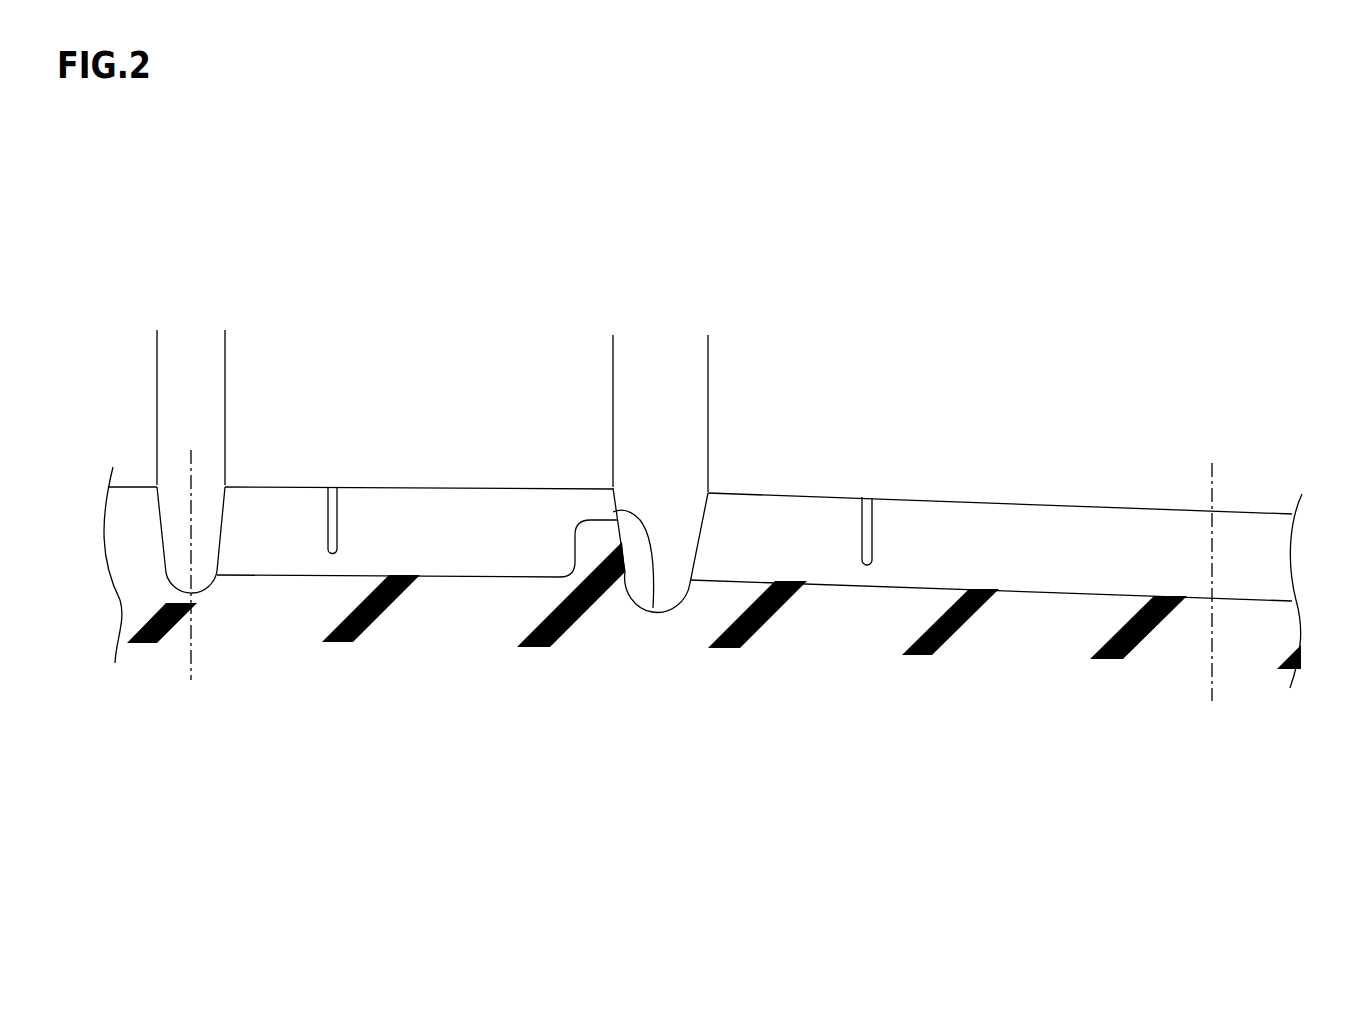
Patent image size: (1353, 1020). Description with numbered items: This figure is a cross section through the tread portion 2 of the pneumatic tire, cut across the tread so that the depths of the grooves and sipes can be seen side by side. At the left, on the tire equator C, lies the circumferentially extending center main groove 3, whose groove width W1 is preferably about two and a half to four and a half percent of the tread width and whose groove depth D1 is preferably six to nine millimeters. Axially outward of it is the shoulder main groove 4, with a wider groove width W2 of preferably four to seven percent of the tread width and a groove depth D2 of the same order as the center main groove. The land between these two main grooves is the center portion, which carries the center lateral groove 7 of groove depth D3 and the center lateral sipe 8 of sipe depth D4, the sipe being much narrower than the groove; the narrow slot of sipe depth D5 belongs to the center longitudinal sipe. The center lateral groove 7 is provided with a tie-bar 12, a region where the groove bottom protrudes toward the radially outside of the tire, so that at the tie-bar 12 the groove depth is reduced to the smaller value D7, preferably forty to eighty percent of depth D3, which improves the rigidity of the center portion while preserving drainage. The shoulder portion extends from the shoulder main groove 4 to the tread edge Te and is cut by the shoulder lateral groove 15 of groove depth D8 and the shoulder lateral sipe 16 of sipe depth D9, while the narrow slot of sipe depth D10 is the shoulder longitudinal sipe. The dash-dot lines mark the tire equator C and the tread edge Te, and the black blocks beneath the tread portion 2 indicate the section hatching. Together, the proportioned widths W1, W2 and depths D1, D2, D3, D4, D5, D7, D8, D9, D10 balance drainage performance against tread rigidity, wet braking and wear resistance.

The tread portion 2 is at (875, 398).
The center main groove 3 is at (180, 507).
The shoulder main groove 4 is at (652, 508).
The center lateral groove 7 is at (406, 507).
The center lateral sipe 8 is at (273, 503).
The tie-bar 12 is at (653, 608).
The shoulder lateral groove 15 is at (1098, 530).
The shoulder lateral sipe 16 is at (717, 517).
The tire equator C is at (193, 657).
The tread edge Te is at (1213, 678).
The groove width of the center main groove W1 is at (257, 333).
The groove width of the shoulder main groove W2 is at (742, 338).
The groove depth of the center main groove D1 is at (252, 487).
The groove depth of the shoulder main groove D2 is at (740, 493).
The groove depth of the center lateral groove D3 is at (455, 488).
The sipe depth of the center lateral sipe D4 is at (298, 487).
The sipe depth of the center longitudinal sipe D5 is at (364, 452).
The groove depth of the center lateral groove at the tie-bar D7 is at (598, 520).
The groove depth of the shoulder lateral groove D8 is at (1022, 500).
The sipe depth of the shoulder lateral sipe D9 is at (811, 495).
The sipe depth of the shoulder longitudinal sipe D10 is at (905, 463).